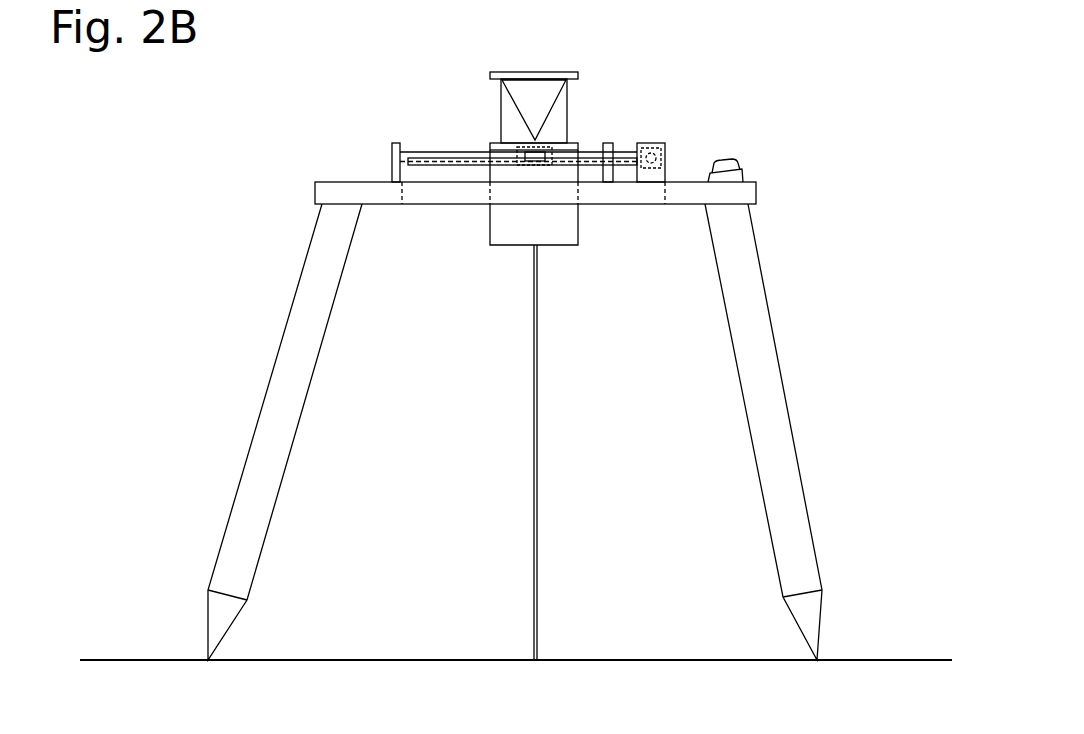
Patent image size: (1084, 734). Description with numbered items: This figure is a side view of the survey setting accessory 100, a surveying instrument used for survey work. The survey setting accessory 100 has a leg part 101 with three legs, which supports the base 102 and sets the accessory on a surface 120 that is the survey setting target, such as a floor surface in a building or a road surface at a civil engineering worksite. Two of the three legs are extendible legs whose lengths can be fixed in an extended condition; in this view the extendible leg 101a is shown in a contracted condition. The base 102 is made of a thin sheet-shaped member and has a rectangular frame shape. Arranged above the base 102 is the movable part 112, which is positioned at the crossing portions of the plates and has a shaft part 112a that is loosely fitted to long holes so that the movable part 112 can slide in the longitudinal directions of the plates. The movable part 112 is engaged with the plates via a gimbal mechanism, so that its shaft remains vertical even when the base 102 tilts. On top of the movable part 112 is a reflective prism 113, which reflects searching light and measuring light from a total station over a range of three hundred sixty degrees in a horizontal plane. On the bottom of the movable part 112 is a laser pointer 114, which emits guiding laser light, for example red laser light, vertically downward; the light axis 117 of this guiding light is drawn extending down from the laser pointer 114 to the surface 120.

The survey setting accessory 100 is at (516, 366).
The leg part 101 is at (270, 355).
The extendible leg 101a is at (772, 400).
The base 102 is at (747, 193).
The movable part 112 is at (538, 111).
The shaft part 112a is at (532, 165).
The reflective prism 113 is at (530, 120).
The laser pointer 114 is at (570, 227).
The light axis 117 is at (537, 450).
The surface 120 is at (323, 658).